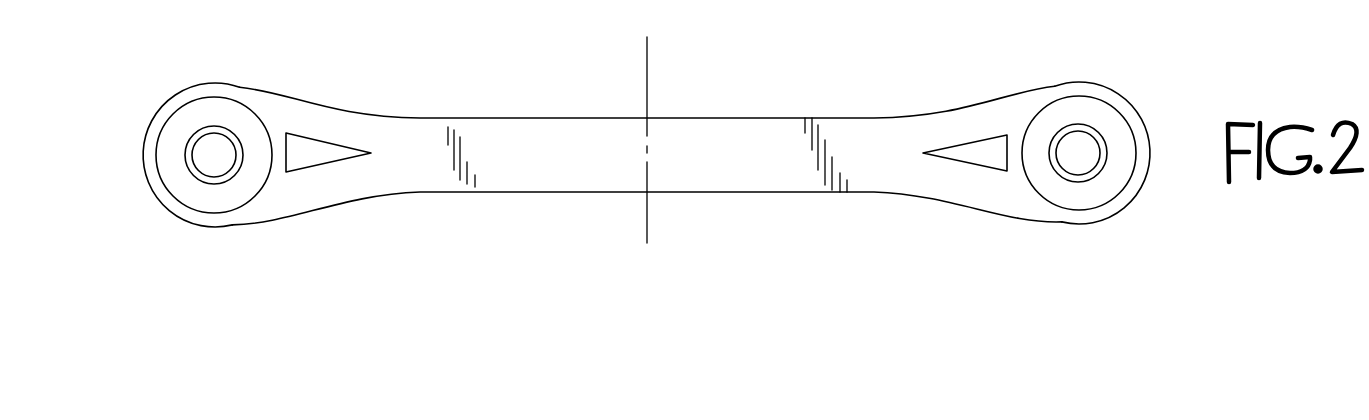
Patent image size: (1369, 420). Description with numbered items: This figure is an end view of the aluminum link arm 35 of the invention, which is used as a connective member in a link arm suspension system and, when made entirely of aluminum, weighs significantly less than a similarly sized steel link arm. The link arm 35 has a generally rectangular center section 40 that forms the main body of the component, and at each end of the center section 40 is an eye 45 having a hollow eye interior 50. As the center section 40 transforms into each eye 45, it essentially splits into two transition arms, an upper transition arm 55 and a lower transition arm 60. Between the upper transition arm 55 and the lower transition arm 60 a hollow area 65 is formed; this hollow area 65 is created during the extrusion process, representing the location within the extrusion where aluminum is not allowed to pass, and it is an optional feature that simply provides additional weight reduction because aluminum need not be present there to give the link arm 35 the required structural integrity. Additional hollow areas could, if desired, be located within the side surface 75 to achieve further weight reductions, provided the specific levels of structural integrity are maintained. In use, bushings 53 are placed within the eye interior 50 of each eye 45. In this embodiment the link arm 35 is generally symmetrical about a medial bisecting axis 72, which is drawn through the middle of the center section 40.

The link arm 35 is at (644, 141).
The center section 40 is at (646, 147).
The eye 45 is at (187, 93).
The eye interior 50 is at (172, 163).
The bushing 53 is at (207, 193).
The upper transition arm 55 is at (275, 105).
The lower transition arm 60 is at (267, 202).
The hollow area 65 is at (308, 152).
The medial bisecting axis 72 is at (648, 203).
The side surface 75 is at (585, 165).